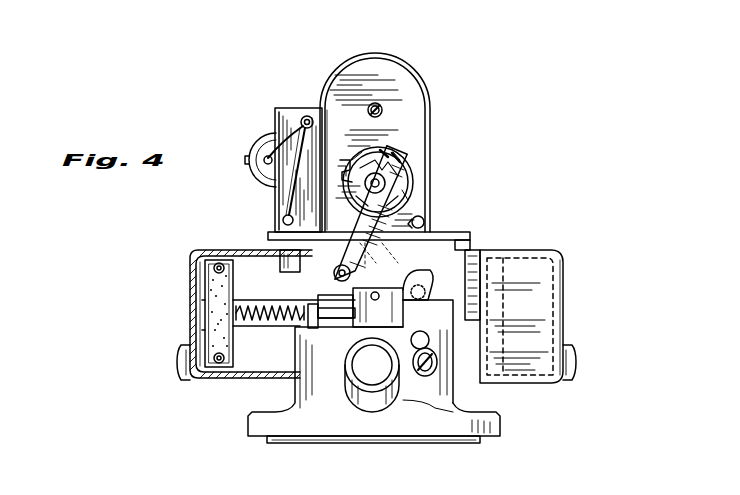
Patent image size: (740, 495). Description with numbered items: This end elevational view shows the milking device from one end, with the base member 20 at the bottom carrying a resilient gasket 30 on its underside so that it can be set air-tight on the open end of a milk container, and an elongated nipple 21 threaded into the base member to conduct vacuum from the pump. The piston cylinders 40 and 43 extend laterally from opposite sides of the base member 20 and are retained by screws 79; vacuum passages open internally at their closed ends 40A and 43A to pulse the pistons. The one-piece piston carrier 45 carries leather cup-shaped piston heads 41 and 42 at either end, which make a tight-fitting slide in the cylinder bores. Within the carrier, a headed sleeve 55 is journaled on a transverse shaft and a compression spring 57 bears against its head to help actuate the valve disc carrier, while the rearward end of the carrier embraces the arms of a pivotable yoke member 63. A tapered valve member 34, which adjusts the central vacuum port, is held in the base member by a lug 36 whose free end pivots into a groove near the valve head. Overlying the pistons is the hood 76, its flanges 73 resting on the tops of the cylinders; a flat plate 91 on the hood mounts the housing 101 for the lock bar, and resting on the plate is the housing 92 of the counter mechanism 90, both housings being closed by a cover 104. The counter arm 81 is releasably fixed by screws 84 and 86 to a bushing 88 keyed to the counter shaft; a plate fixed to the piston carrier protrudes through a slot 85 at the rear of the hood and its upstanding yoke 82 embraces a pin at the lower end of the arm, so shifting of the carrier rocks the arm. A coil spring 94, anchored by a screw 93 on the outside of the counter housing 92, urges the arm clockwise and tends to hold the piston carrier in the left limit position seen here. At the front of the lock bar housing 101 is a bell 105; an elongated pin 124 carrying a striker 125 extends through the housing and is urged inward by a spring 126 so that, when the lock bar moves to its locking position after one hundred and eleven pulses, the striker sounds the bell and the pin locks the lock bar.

The base member 20 is at (255, 428).
The elongated nipple 21 is at (363, 385).
The resilient gasket 30 is at (474, 444).
The tapered valve member 34 is at (426, 377).
The lug 36 is at (441, 351).
The piston cylinder 40 is at (202, 250).
The closed end of piston cylinder 40A is at (190, 300).
The piston head 41 is at (204, 265).
The piston head 42 is at (508, 287).
The piston cylinder 43 is at (545, 256).
The closed end of piston cylinder 43A is at (565, 305).
The piston carrier 45 is at (238, 298).
The headed sleeve 55 is at (292, 322).
The compression spring 57 is at (256, 336).
The yoke member 63 is at (406, 313).
The flange 73 is at (482, 252).
The hood 76 is at (476, 244).
The screw 79 is at (575, 360).
The counter arm 81 is at (332, 248).
The yoke 82 is at (352, 262).
The screw 84 is at (412, 176).
The slot 85 is at (424, 272).
The screw 86 is at (350, 164).
The bushing 88 is at (385, 190).
The counter mechanism 90 is at (438, 93).
The flat plate 91 is at (270, 235).
The counter housing 92 is at (430, 108).
The screw 93 is at (426, 221).
The coil spring 94 is at (396, 162).
The lock bar housing 101 is at (280, 190).
The cover 104 is at (398, 60).
The bell 105 is at (252, 142).
The elongated pin 124 is at (306, 116).
The striker 125 is at (270, 153).
The spring 126 is at (312, 132).